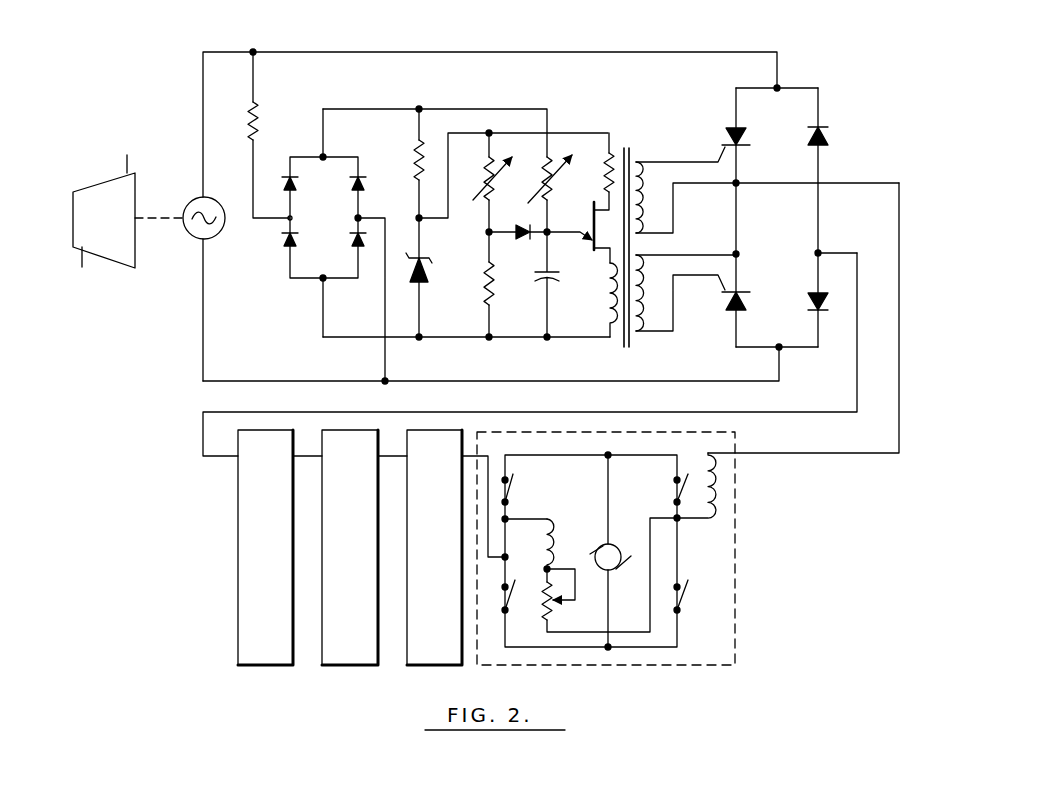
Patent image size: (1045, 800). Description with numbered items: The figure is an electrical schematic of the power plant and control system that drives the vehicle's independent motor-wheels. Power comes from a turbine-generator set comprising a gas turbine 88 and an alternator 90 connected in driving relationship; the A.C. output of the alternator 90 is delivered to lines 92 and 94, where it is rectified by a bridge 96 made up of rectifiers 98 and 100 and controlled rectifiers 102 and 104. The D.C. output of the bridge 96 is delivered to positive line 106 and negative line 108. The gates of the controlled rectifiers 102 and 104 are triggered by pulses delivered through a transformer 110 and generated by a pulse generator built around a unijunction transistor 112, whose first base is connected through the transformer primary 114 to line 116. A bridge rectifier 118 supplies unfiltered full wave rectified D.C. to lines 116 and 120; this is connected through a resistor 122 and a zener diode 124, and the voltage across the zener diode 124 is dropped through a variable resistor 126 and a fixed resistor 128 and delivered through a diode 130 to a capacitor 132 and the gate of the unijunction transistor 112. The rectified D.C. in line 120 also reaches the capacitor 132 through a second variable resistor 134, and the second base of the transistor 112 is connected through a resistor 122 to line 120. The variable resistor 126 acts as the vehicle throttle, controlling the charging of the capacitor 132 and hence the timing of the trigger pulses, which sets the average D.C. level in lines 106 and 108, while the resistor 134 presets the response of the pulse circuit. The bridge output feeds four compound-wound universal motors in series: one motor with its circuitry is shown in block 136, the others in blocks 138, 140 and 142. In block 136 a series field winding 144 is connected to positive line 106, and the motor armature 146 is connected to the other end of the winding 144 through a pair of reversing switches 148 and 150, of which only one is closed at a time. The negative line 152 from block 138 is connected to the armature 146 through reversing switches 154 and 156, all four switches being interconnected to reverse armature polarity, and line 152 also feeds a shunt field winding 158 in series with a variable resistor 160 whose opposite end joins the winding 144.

The gas turbine 88 is at (102, 190).
The alternator 90 is at (190, 234).
The line 92 is at (427, 52).
The line 94 is at (437, 381).
The bridge 96 is at (814, 217).
The rectifier 98 is at (822, 140).
The rectifier 100 is at (807, 298).
The controlled rectifier 102 is at (722, 135).
The controlled rectifier 104 is at (727, 298).
The positive line 106 is at (812, 453).
The negative line 108 is at (808, 412).
The transformer 110 is at (649, 217).
The unijunction transistor 112 is at (595, 222).
The transformer primary 114 is at (606, 296).
The line 116 is at (562, 338).
The bridge rectifier 118 is at (300, 287).
The line 120 is at (387, 109).
The resistor 122 is at (416, 162).
The zener diode 124 is at (431, 272).
The variable resistor 126 is at (489, 195).
The fixed resistor 128 is at (488, 295).
The diode 130 is at (518, 238).
The capacitor 132 is at (552, 275).
The variable resistor 134 is at (550, 160).
The block 136 is at (636, 566).
The block 138 is at (445, 667).
The block 140 is at (358, 667).
The block 142 is at (253, 667).
The series field winding 144 is at (722, 490).
The motor armature 146 is at (622, 545).
The reversing switch 148 is at (690, 490).
The reversing switch 150 is at (690, 593).
The negative line 152 is at (472, 452).
The reversing switch 154 is at (512, 487).
The reversing switch 156 is at (518, 585).
The shunt field winding 158 is at (557, 548).
The variable resistor 160 is at (549, 605).